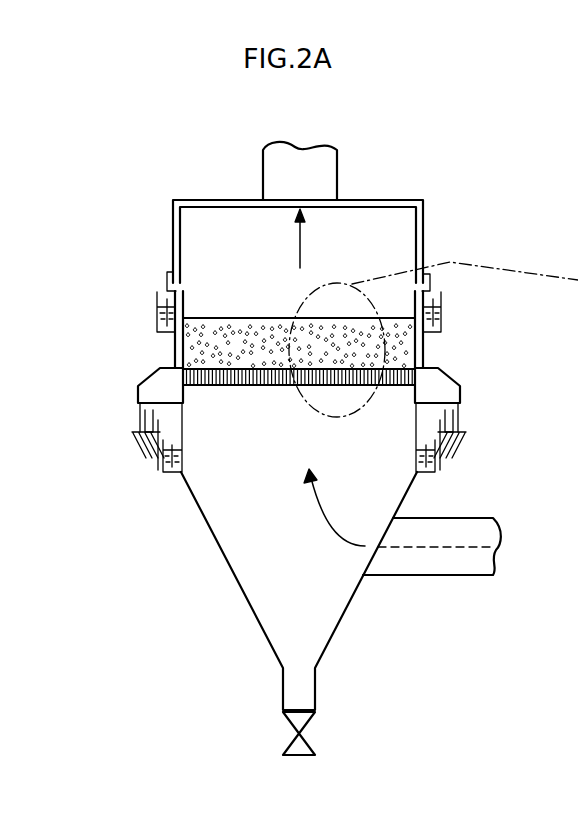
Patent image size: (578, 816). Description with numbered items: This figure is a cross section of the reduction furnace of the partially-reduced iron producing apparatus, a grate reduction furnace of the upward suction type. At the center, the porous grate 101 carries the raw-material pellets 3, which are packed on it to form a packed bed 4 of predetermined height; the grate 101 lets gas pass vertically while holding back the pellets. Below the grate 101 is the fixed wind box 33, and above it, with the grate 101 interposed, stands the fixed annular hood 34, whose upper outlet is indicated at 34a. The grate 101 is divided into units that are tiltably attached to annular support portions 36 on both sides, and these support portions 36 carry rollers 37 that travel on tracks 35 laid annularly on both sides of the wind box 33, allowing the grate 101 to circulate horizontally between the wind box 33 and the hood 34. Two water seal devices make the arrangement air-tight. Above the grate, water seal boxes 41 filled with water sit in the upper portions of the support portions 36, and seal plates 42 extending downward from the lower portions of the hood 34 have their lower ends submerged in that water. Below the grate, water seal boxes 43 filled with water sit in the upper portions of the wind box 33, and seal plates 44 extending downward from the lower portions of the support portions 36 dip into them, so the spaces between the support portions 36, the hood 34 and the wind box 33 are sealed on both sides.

The raw-material pellets 3 is at (250, 340).
The packed bed 4 is at (213, 317).
The wind box 33 is at (243, 595).
The hood 34 is at (424, 220).
The exhaust duct 34a is at (396, 201).
The tracks 35 is at (138, 452).
The support portions 36 is at (160, 384).
The rollers 37 is at (147, 428).
The water seal boxes 41 is at (157, 318).
The seal plates 42 is at (167, 279).
The water seal boxes 43 is at (170, 473).
The seal plates 44 is at (142, 448).
The grate 101 is at (240, 387).